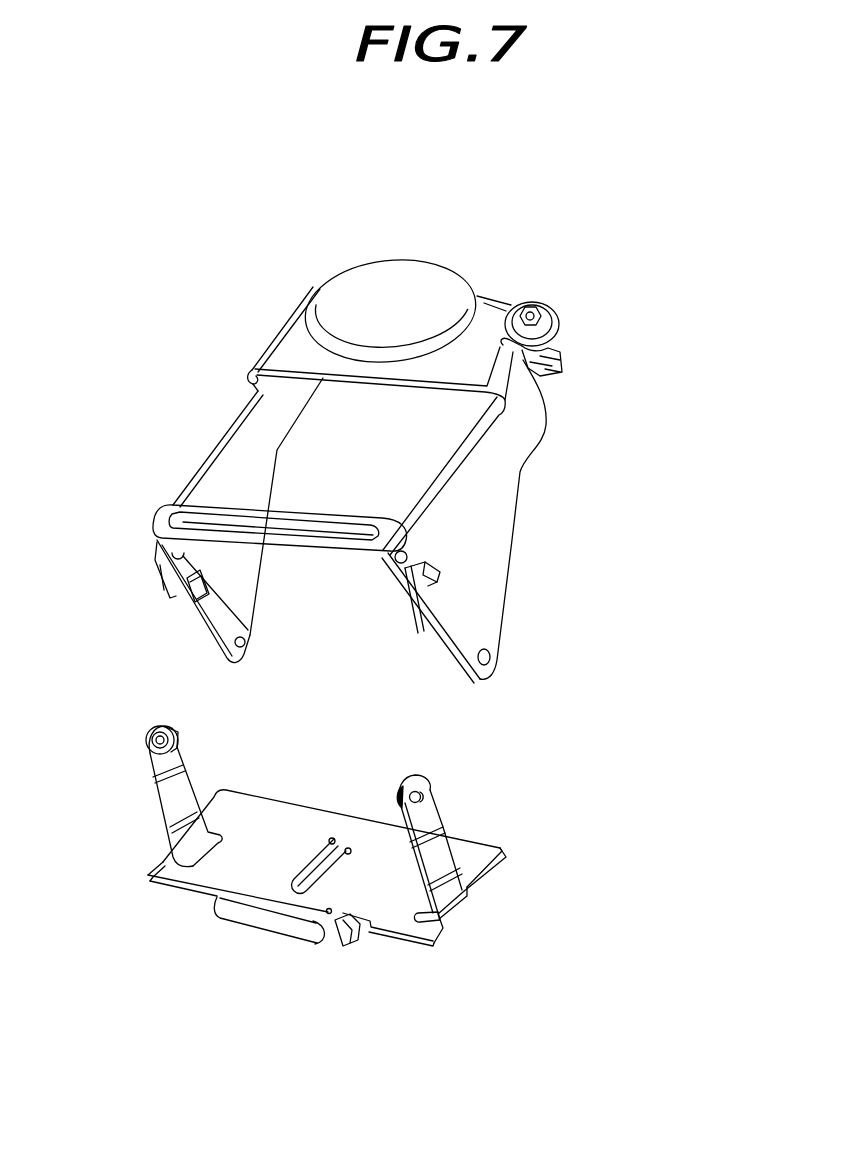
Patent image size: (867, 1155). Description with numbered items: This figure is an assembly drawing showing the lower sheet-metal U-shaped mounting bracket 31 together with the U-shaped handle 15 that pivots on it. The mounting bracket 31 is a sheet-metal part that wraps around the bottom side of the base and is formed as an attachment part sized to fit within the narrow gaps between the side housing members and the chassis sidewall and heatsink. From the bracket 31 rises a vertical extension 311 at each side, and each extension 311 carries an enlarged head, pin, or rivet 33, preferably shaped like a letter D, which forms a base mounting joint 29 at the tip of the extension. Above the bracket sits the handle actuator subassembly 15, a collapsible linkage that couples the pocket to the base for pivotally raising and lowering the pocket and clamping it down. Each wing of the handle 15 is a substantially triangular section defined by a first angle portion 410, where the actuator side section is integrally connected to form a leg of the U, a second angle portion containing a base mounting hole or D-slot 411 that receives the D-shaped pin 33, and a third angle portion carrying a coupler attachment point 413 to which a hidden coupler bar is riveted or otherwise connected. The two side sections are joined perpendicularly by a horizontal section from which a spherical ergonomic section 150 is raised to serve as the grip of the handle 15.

The U-shaped handle 15 is at (357, 475).
The spherical ergonomic section 150 is at (387, 293).
The first angle portion 410 is at (513, 430).
The D-slot 411 is at (435, 568).
The coupler attachment point 413 is at (493, 657).
The mounting bracket 31 is at (222, 873).
The base mounting pin 33 is at (150, 757).
The vertical extension 311 is at (433, 855).
The base mounting joint 29 is at (430, 795).